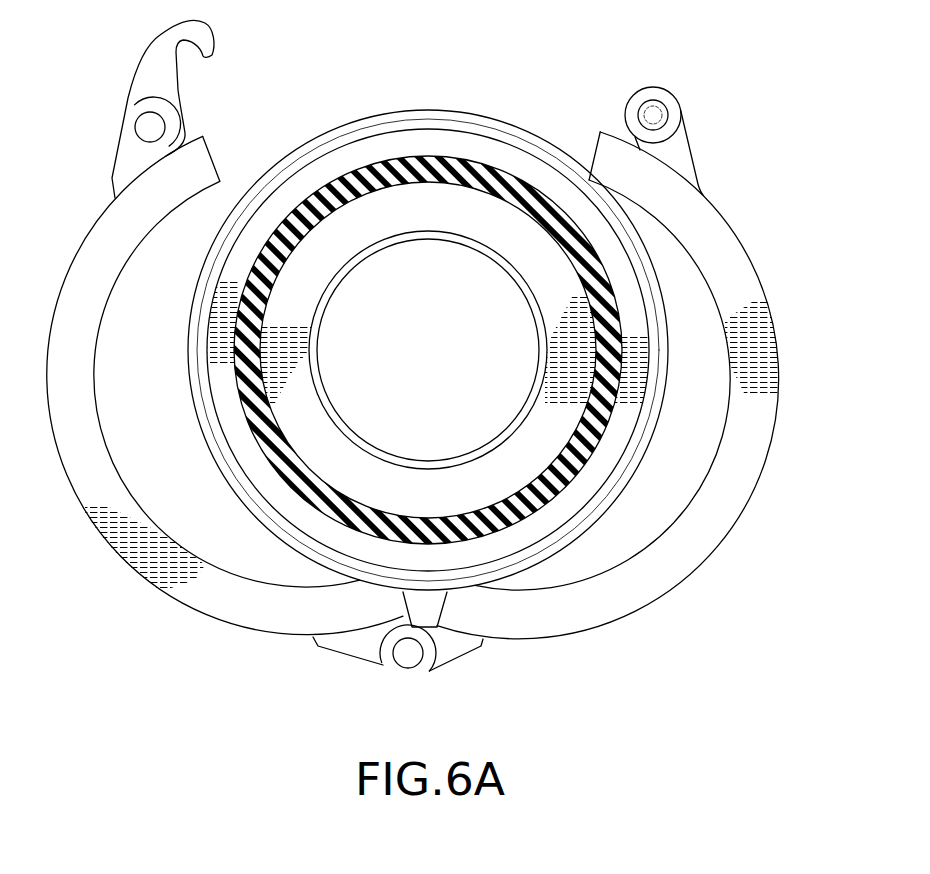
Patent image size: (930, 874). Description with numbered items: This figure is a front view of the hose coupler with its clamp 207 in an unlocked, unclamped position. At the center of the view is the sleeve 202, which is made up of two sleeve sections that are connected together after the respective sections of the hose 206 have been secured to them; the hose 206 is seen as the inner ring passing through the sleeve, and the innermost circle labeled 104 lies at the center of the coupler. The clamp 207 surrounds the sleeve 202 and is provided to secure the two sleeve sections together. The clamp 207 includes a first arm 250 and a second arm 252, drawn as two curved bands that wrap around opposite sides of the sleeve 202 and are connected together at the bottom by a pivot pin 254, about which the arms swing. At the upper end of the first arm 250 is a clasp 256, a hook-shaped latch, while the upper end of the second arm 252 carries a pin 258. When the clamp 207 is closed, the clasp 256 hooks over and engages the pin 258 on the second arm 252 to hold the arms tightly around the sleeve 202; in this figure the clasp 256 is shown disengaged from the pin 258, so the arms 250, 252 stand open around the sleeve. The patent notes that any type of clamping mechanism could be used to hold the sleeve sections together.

The lens barrel 104 is at (452, 365).
The sleeve 202 is at (405, 112).
The hose 206 is at (503, 178).
The clamp 207 is at (740, 282).
The first arm 250 is at (122, 557).
The second arm 252 is at (622, 385).
The pivot pin 254 is at (406, 657).
The clasp 256 is at (157, 37).
The pin 258 is at (657, 112).